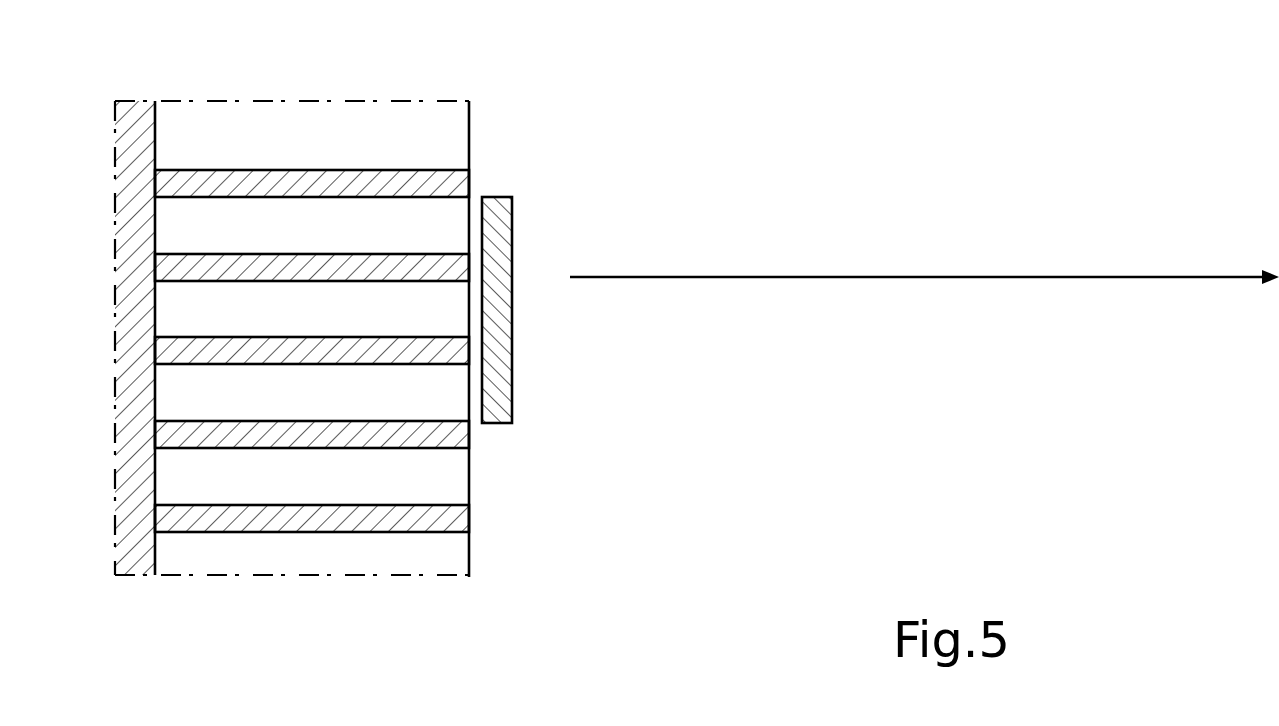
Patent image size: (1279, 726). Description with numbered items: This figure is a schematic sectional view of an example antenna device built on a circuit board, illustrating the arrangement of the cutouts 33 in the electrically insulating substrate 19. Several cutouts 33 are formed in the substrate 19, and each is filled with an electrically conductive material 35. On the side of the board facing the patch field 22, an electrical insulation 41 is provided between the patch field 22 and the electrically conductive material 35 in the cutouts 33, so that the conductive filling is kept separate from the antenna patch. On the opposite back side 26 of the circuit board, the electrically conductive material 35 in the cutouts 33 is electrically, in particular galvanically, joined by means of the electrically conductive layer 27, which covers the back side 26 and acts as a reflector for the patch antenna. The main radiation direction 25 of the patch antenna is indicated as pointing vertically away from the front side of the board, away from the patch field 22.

The substrate 19 is at (400, 125).
The back side 26 is at (150, 143).
The electrically conductive layer 27 is at (135, 568).
The cutouts 33 is at (343, 170).
The electrically conductive material 35 is at (245, 170).
The patch field 22 is at (505, 198).
The electrical insulation 41 is at (480, 195).
The main radiation direction 25 is at (876, 276).